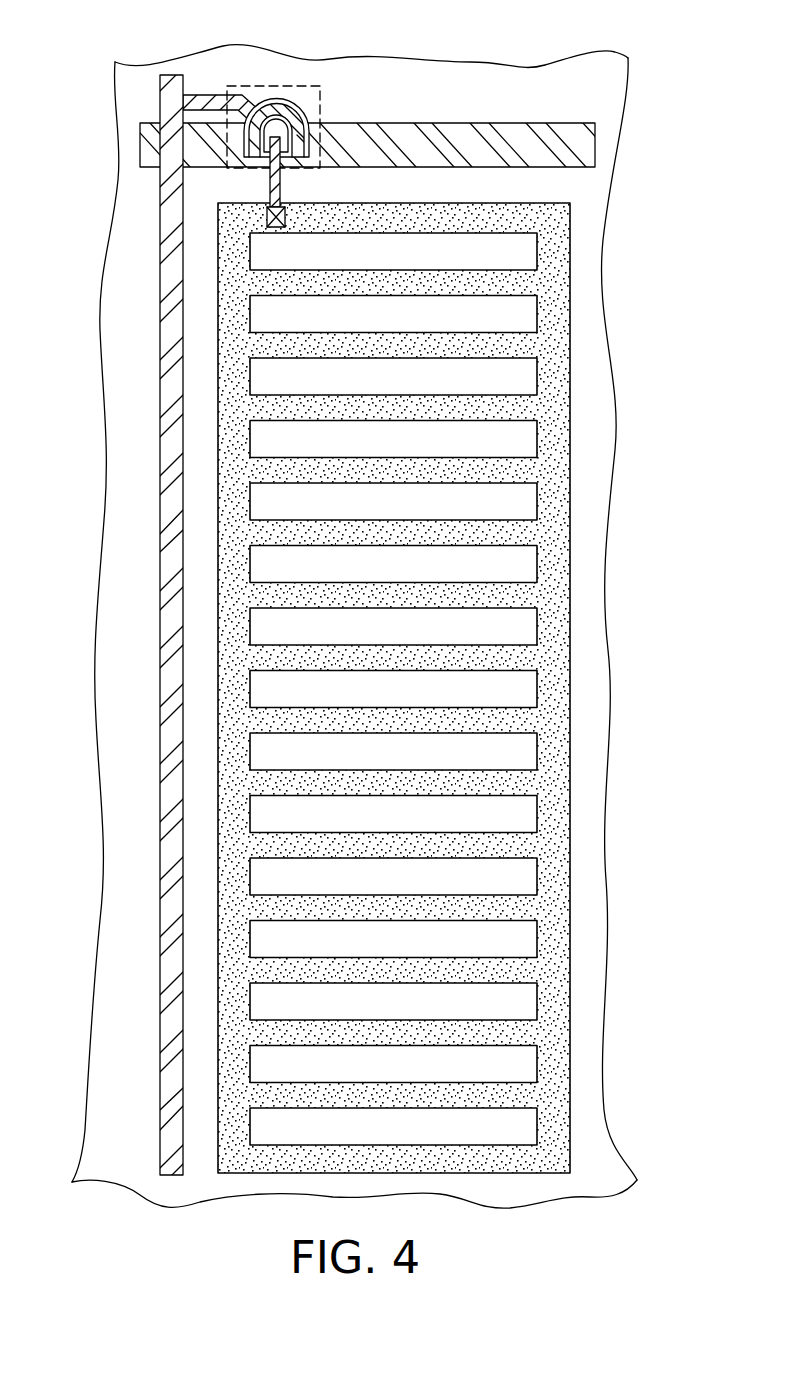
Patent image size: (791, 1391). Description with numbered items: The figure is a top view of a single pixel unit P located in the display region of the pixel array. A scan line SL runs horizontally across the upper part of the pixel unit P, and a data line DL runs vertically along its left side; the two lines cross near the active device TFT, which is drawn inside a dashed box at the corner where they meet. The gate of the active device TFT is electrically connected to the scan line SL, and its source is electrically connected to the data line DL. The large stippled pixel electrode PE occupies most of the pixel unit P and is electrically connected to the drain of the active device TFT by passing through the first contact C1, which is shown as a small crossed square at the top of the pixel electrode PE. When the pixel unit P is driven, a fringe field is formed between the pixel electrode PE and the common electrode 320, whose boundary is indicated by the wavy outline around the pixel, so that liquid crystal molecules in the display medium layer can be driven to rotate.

The common electrode 320 is at (604, 212).
The scan line SL is at (526, 140).
The data line DL is at (170, 98).
The active device TFT is at (305, 92).
The pixel electrode PE is at (553, 353).
The first contact C1 is at (268, 218).
The pixel unit P is at (697, 1225).